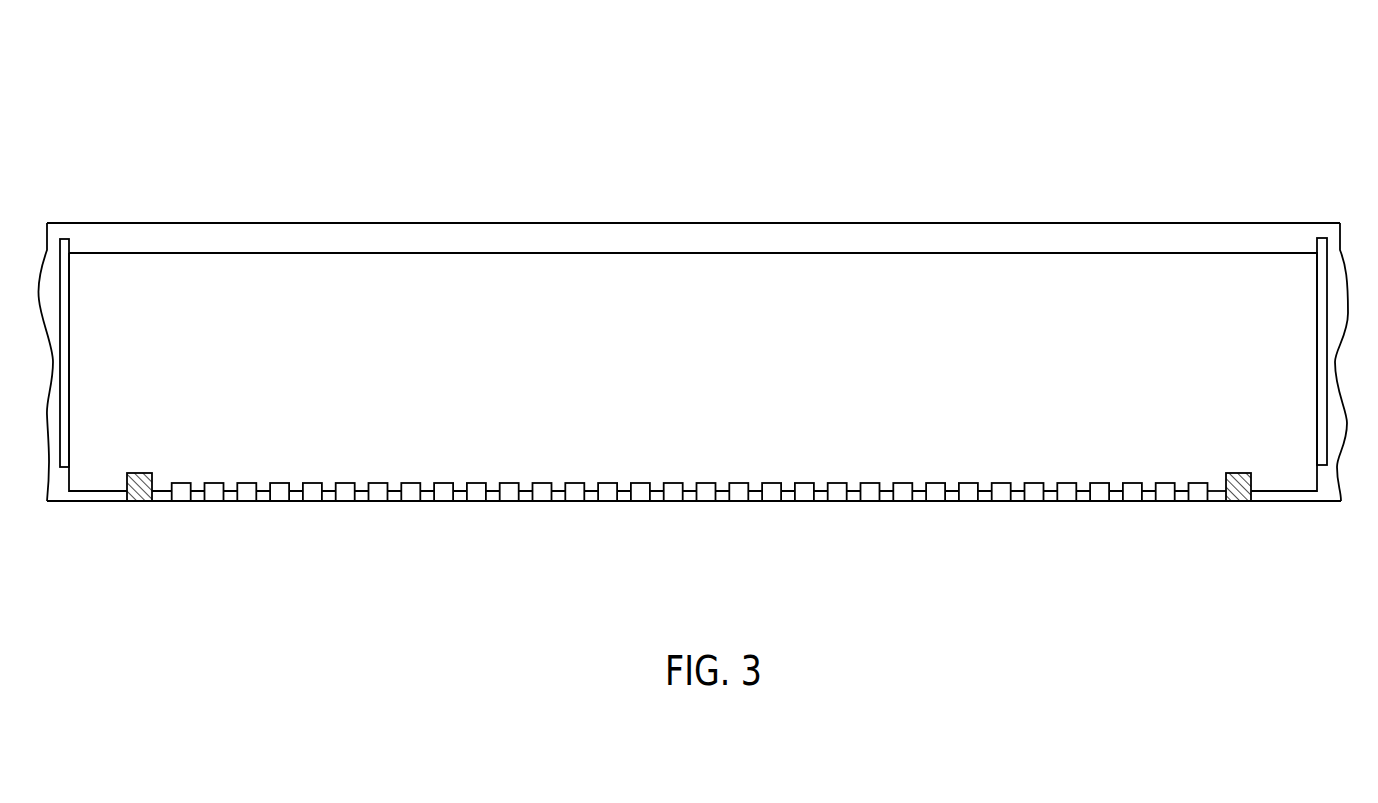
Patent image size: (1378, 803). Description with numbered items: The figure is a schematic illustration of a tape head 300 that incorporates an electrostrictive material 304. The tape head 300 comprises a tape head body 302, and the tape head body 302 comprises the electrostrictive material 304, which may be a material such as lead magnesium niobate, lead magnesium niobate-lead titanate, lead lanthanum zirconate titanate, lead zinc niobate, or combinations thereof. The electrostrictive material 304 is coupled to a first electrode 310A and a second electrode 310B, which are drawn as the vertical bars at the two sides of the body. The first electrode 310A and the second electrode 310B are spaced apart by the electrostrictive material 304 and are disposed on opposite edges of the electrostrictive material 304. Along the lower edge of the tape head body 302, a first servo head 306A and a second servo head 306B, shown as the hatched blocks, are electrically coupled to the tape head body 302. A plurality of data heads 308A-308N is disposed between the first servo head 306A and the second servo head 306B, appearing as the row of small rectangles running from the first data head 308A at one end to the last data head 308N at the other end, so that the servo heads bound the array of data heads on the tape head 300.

The tape head 300 is at (155, 105).
The tape head body 302 is at (968, 240).
The electrostrictive material 304 is at (357, 292).
The first servo head 306A is at (137, 502).
The second servo head 306B is at (1240, 502).
The data head 308A is at (215, 502).
The data head 308N is at (1163, 502).
The first electrode 310A is at (62, 239).
The second electrode 310B is at (1320, 238).